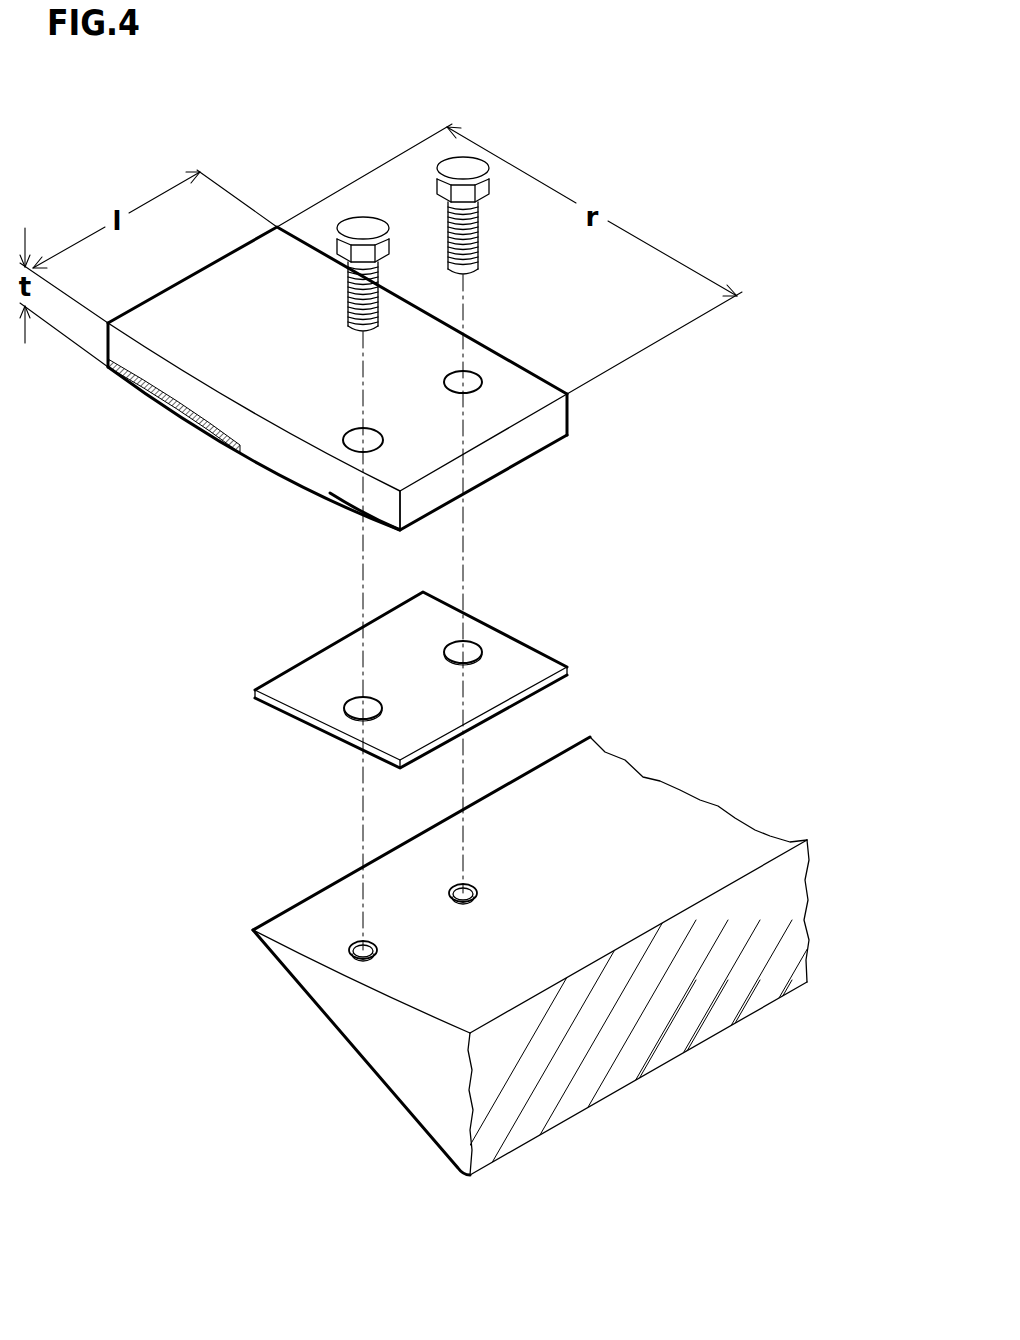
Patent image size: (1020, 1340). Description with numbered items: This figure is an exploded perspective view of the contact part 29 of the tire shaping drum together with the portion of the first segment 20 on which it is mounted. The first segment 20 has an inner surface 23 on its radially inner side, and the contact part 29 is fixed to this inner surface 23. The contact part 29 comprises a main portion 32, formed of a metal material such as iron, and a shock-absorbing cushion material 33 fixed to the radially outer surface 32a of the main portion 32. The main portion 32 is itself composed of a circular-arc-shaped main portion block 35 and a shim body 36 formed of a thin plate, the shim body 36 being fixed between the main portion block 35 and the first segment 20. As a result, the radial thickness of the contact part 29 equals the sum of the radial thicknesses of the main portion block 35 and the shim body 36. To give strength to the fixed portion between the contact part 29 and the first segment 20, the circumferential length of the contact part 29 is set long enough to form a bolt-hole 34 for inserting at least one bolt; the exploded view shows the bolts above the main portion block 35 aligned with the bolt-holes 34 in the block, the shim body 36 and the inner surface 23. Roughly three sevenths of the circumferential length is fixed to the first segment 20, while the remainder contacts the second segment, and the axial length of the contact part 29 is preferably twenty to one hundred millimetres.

The first segment 20 is at (638, 878).
The inner surface 23 is at (633, 813).
The contact part 29 is at (80, 445).
The main portion 32 is at (140, 535).
The radially outer surface 32a is at (342, 505).
The shock-absorbing cushion material 33 is at (132, 388).
The bolt-hole 34 is at (342, 440).
The main portion block 35 is at (280, 407).
The shim body 36 is at (310, 687).